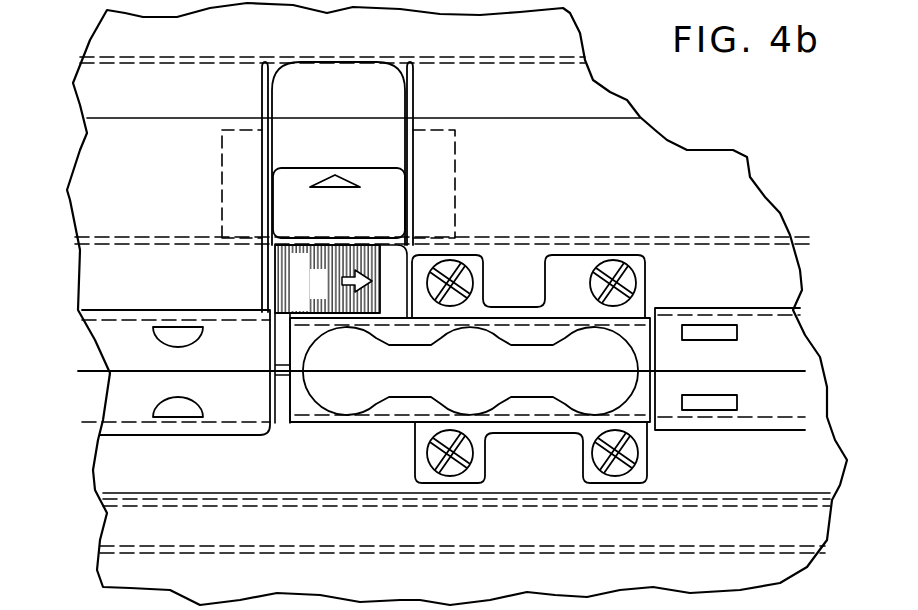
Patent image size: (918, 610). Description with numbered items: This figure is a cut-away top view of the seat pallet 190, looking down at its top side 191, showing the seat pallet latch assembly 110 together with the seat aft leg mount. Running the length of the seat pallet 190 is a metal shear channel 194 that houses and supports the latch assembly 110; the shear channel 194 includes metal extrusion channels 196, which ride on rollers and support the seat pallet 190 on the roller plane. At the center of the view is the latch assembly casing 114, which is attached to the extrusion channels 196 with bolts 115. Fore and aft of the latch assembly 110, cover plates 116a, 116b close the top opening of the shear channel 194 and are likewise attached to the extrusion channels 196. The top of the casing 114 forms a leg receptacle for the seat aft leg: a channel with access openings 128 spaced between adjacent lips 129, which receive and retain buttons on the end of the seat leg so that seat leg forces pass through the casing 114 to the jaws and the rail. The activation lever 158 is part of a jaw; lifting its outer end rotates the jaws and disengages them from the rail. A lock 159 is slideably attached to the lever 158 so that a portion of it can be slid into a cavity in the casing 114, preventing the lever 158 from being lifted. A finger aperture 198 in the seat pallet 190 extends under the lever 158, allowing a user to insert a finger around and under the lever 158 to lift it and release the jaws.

The seat pallet latch assembly 110 is at (530, 288).
The latch assembly casing 114 is at (637, 333).
The bolts 115 is at (437, 263).
The cover plate 116a is at (792, 350).
The cover plate 116b is at (123, 350).
The access openings 128 is at (352, 398).
The lips 129 is at (373, 440).
The activation lever 158 is at (388, 185).
The lock 159 is at (372, 262).
The seat pallet 190 is at (60, 296).
The seat pallet top side 191 is at (78, 187).
The shear channel 194 is at (80, 243).
The extrusion channels 196 is at (822, 286).
The finger aperture 198 is at (360, 92).